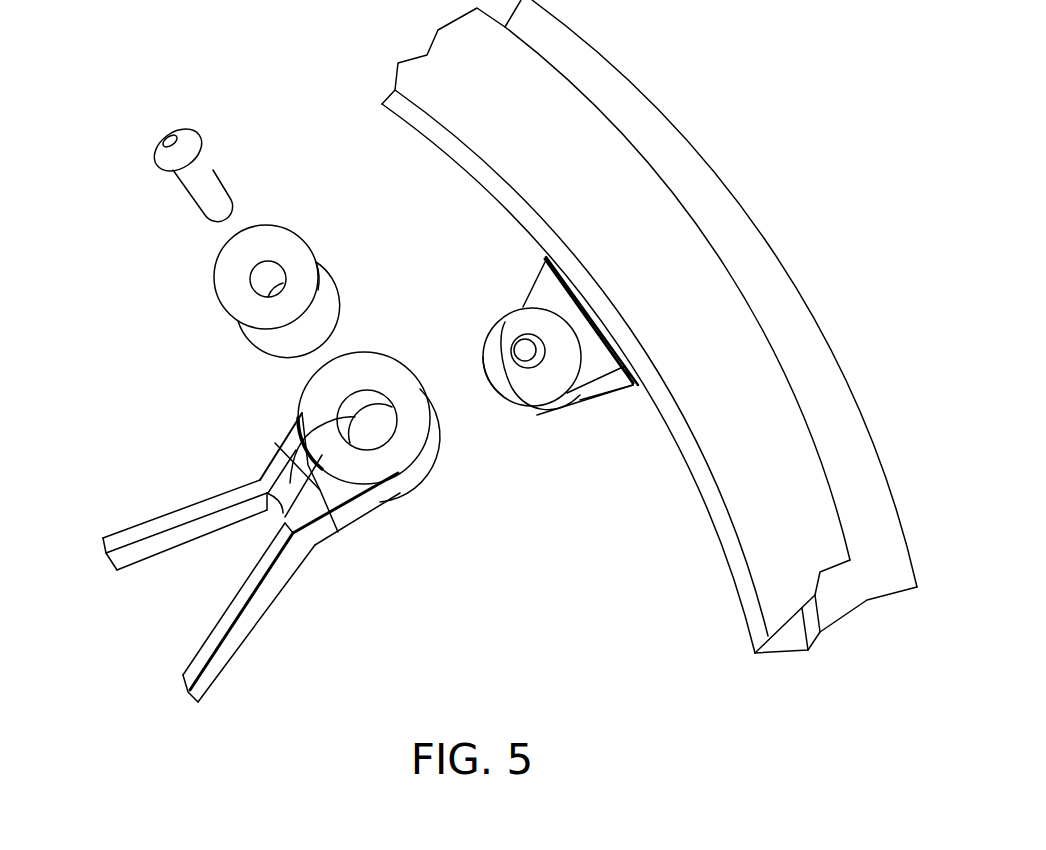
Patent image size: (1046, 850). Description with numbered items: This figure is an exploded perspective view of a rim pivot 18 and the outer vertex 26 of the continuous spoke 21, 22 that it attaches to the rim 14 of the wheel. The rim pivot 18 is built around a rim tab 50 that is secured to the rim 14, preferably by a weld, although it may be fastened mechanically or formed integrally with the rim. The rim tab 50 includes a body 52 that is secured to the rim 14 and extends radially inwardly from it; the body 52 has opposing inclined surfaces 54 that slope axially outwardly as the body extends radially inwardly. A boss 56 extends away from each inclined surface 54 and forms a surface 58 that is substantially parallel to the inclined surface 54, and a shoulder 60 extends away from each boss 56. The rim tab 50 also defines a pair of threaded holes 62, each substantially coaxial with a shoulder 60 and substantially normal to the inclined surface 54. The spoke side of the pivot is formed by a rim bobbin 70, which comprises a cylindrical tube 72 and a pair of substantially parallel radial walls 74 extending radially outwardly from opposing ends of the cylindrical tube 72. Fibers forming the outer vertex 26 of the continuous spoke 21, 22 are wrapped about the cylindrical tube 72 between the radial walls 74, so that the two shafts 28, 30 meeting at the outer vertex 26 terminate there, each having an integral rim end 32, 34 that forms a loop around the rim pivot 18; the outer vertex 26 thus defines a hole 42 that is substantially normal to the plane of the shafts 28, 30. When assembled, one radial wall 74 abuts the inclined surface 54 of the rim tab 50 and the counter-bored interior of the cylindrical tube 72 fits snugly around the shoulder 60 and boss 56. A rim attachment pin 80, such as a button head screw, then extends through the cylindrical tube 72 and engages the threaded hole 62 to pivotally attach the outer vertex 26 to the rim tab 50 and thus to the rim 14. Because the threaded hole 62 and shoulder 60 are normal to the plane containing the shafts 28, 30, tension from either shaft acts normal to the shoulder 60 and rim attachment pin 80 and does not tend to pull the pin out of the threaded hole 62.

The rim 14 is at (733, 192).
The rim pivot 18 is at (185, 62).
The continuous spoke 21 is at (236, 527).
The continuous spoke 22 is at (182, 564).
The outer vertex 26 is at (273, 482).
The shaft 28 is at (257, 612).
The shaft 30 is at (122, 541).
The rim end 32 is at (295, 440).
The rim end 34 is at (342, 493).
The hole 42 is at (287, 515).
The rim tab 50 is at (562, 359).
The body 52 is at (595, 392).
The inclined surface 54 is at (543, 292).
The boss 56 is at (513, 412).
The surface 58 is at (501, 381).
The shoulder 60 is at (525, 350).
The threaded hole 62 is at (503, 388).
The rim bobbin 70 is at (252, 272).
The cylindrical tube 72 is at (268, 262).
The radial wall 74 is at (300, 250).
The rim attachment pin 80 is at (212, 170).